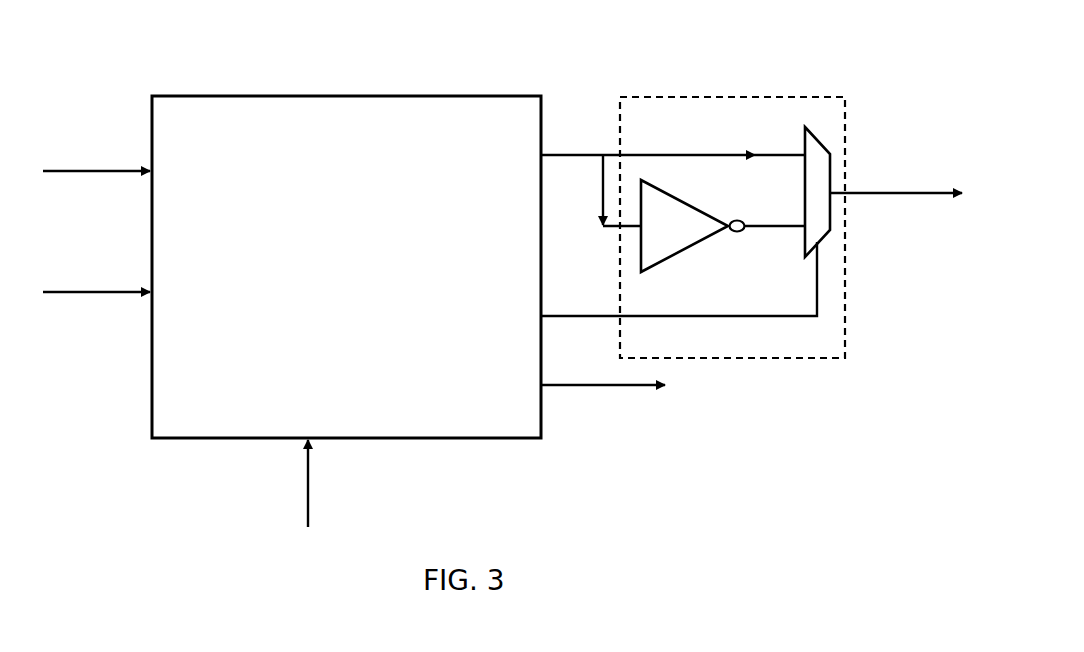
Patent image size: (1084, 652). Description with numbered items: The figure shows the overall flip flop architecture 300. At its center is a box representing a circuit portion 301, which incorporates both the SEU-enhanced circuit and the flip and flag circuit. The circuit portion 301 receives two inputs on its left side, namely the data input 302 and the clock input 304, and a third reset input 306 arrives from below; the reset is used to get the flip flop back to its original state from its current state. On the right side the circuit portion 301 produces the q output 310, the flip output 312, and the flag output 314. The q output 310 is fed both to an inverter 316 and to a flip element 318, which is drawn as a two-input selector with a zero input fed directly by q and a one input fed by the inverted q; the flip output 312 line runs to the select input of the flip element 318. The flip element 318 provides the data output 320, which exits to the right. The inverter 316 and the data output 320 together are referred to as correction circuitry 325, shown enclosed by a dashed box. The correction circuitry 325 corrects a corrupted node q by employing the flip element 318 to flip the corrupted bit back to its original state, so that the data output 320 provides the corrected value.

The flip flop architecture 300 is at (662, 66).
The circuit portion 301 is at (343, 94).
The input (d) 302 is at (138, 158).
The input (clock) 304 is at (147, 300).
The input (reset) 306 is at (309, 496).
The output (q) 310 is at (548, 145).
The output (flip) 312 is at (545, 304).
The output (flag) 314 is at (548, 378).
The inverter 316 is at (707, 242).
The flip element 318 is at (825, 140).
The output (dout) 320 is at (851, 201).
The correction circuitry 325 is at (800, 97).